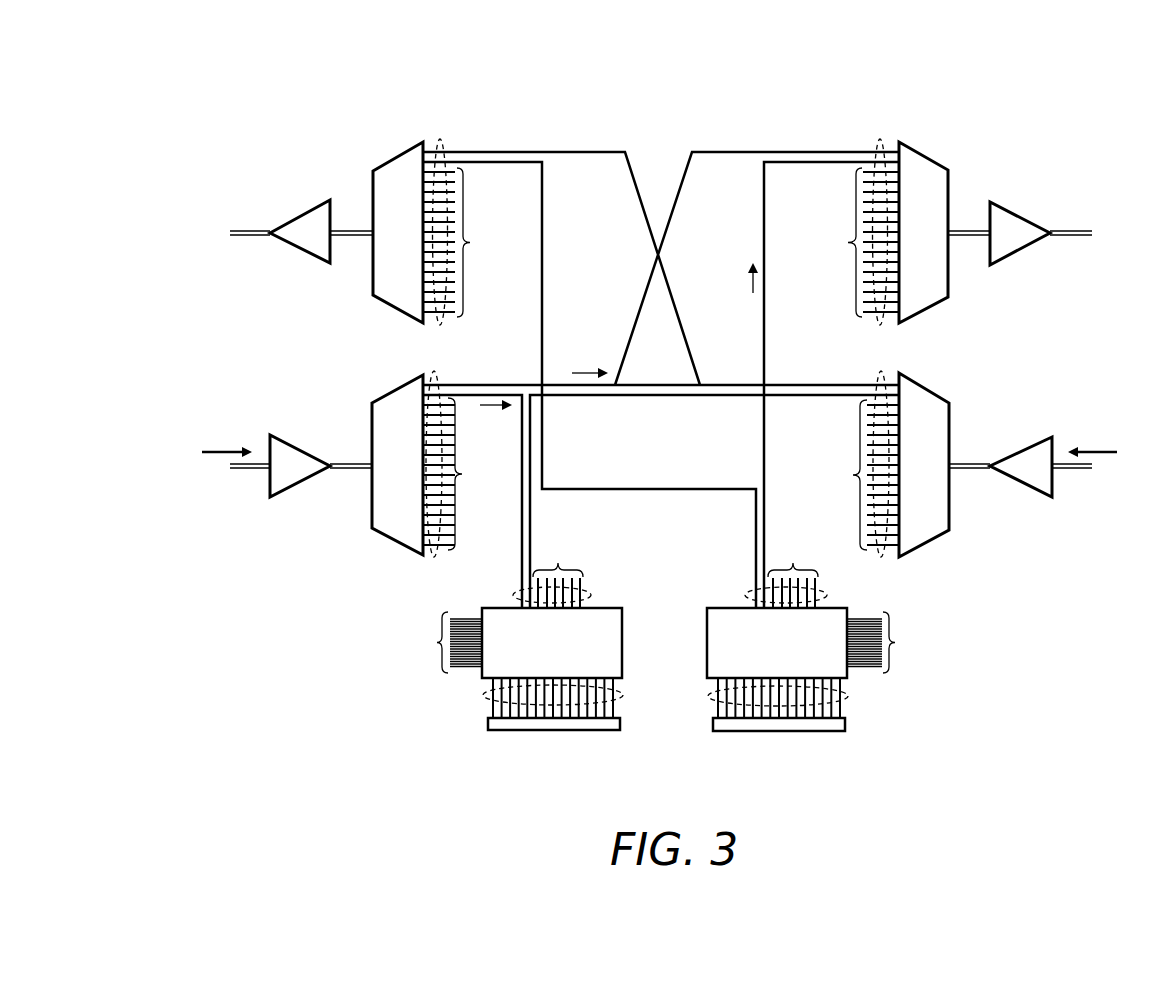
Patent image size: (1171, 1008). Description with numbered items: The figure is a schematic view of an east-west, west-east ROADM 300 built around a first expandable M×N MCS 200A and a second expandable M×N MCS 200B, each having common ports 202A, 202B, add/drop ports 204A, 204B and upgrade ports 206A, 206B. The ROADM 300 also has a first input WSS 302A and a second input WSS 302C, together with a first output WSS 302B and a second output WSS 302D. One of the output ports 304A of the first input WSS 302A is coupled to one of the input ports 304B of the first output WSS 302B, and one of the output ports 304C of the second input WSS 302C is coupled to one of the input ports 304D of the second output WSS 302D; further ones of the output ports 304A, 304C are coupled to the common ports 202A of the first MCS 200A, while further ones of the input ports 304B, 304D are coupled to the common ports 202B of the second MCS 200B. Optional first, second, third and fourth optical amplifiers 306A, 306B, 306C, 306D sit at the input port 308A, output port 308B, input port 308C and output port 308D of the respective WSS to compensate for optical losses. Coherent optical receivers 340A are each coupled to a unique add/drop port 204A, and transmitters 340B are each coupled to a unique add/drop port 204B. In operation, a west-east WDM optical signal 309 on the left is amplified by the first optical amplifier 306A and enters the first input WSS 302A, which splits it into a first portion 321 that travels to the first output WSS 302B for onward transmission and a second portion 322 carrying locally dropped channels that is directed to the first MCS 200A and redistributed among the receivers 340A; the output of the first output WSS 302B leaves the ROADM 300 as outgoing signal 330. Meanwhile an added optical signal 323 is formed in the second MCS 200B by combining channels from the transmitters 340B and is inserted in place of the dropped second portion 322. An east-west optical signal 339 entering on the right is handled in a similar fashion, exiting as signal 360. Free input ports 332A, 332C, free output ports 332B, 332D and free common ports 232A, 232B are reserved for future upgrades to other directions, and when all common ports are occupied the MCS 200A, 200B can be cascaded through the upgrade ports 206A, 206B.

The ROADM 300 is at (661, 456).
The first input WSS 302A is at (403, 395).
The first output WSS 302B is at (943, 157).
The second input WSS 302C is at (923, 385).
The second output WSS 302D is at (383, 163).
The output ports of first input WSS 304A is at (436, 370).
The input ports of first output WSS 304B is at (880, 142).
The output ports of second input WSS 304C is at (887, 372).
The input ports of second output WSS 304D is at (443, 142).
The first optical amplifier 306A is at (298, 485).
The second optical amplifier 306B is at (1023, 250).
The third optical amplifier 306C is at (1020, 484).
The fourth optical amplifier 306D is at (295, 252).
The input port of first input WSS 308A is at (348, 466).
The output port of first output WSS 308B is at (977, 233).
The input port of second input WSS 308C is at (977, 466).
The output port of second output WSS 308D is at (352, 233).
The west-east WDM optical signal 309 is at (212, 452).
The east-west optical signal 339 is at (1108, 457).
The output optical signal 330 is at (1080, 235).
The output optical signal 360 is at (252, 235).
The first portion 321 is at (587, 373).
The second portion 322 is at (490, 405).
The added optical signal 323 is at (753, 290).
The free input ports of first input WSS 332A is at (474, 467).
The free output ports of first output WSS 332B is at (841, 234).
The free input ports of second input WSS 332C is at (845, 467).
The free output ports of second output WSS 332D is at (482, 234).
The first expandable M×N MCS 200A is at (530, 660).
The second expandable M×N MCS 200B is at (755, 660).
The common ports of first MCS 202A is at (590, 595).
The common ports of second MCS 202B is at (747, 593).
The add/drop ports of first MCS 204A is at (483, 695).
The add/drop ports of second MCS 204B is at (847, 700).
The upgrade ports of first MCS 206A is at (427, 642).
The upgrade ports of second MCS 206B is at (904, 642).
The free common ports of first MCS 232A is at (563, 571).
The free common ports of second MCS 232B is at (801, 571).
The coherent optical receivers 340A is at (543, 731).
The transmitters 340B is at (773, 733).